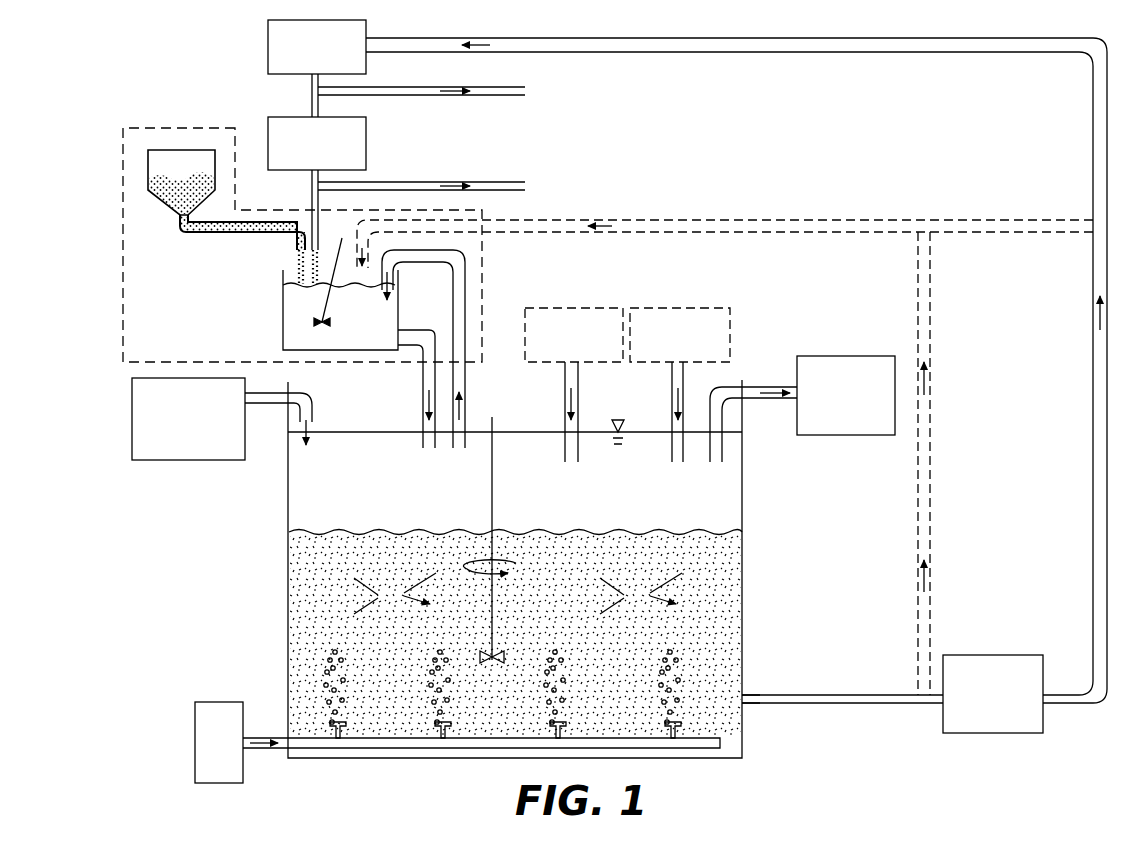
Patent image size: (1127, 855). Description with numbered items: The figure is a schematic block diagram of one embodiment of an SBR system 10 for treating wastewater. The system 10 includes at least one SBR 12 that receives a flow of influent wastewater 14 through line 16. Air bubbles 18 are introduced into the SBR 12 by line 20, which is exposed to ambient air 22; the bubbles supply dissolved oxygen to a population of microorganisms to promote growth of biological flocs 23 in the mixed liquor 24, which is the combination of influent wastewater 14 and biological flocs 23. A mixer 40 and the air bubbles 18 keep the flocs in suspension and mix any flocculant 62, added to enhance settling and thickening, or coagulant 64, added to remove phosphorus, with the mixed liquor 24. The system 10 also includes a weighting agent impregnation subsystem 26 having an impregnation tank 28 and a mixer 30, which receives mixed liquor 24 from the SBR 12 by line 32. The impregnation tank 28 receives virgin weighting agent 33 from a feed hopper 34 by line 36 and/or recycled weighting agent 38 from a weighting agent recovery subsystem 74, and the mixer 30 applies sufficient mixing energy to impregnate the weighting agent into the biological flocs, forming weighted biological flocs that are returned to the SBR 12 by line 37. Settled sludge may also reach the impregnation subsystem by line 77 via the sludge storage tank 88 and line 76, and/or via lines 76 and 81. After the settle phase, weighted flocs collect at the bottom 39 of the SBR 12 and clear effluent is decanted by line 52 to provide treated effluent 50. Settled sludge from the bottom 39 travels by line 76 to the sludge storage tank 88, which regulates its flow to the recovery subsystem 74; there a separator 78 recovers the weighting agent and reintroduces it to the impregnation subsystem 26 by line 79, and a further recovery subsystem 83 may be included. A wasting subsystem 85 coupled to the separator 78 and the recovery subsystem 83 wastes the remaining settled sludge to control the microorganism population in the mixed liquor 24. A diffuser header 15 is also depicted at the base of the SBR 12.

The SBR system 10 is at (863, 11).
The SBR 12 is at (742, 563).
The influent wastewater 14 is at (312, 553).
The air header pipe 15 is at (742, 745).
The line 16 is at (268, 406).
The air bubbles 18 is at (430, 697).
The line 20 is at (263, 738).
The ambient air 22 is at (219, 742).
The biological flocs 23 is at (518, 593).
The mixed liquor 24 is at (348, 432).
The weighting agent impregnation subsystem 26 is at (302, 245).
The impregnation tank 28 is at (340, 310).
The mixer 30 is at (330, 318).
The line 32 is at (408, 262).
The virgin weighting agent 33 is at (178, 208).
The feed hopper 34 is at (181, 182).
The line 36 is at (206, 233).
The line 37 is at (423, 375).
The recycled weighting agent 38 is at (320, 250).
The bottom 39 is at (748, 680).
The mixer 40 is at (486, 432).
The treated effluent 50 is at (846, 395).
The line 52 is at (778, 400).
The flocculant 62 is at (574, 385).
The coagulant 64 is at (680, 385).
The weighting agent recovery subsystem 74 is at (250, 130).
The line 76 is at (898, 704).
The line 77 is at (807, 233).
The separator 78 is at (317, 47).
The line 79 is at (312, 96).
The line 81 is at (929, 432).
The recovery subsystem 83 is at (317, 143).
The wasting subsystem 85 is at (402, 84).
The sludge storage tank 88 is at (993, 694).